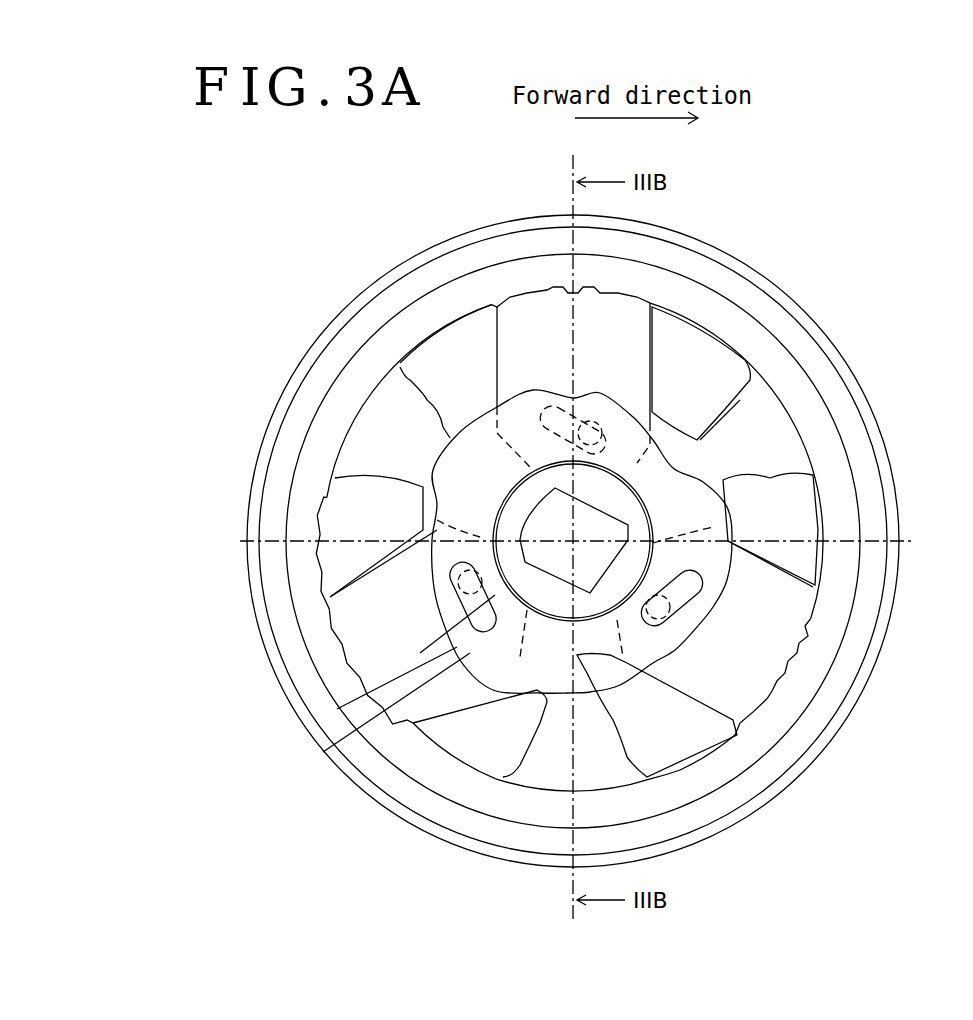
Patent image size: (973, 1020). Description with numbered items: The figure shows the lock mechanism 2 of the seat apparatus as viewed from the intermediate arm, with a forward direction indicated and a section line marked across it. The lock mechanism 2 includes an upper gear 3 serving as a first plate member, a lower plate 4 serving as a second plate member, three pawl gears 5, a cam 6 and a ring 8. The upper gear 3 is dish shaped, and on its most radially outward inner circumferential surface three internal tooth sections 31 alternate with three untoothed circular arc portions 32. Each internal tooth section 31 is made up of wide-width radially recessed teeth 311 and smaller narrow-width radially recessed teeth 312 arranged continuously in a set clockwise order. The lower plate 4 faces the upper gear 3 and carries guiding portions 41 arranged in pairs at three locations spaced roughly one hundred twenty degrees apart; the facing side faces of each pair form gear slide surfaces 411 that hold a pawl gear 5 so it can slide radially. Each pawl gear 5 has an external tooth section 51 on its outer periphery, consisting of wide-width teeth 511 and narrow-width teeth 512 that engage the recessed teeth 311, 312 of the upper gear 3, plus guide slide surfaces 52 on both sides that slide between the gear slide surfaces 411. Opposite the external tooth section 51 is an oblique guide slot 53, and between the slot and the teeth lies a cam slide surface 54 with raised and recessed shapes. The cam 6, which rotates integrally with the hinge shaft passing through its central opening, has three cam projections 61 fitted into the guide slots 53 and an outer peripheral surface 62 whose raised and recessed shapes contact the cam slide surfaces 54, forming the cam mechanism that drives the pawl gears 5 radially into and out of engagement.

The lock mechanism 2 is at (245, 252).
The upper gear 3 is at (372, 318).
The internal tooth sections 31 is at (312, 619).
The wide-width radially recessed teeth 311 is at (680, 768).
The narrow-width radially recessed teeth 312 is at (723, 760).
The circular arc portions 32 is at (340, 387).
The lower plate 4 is at (788, 433).
The guiding portions 41 is at (805, 517).
The gear slide surfaces 411 is at (625, 338).
The pawl gears 5 is at (617, 307).
The external tooth section 51 is at (569, 328).
The wide-width teeth 511 is at (797, 657).
The narrow-width teeth 512 is at (780, 680).
The guide slide surfaces 52 is at (740, 400).
The guide slot 53 is at (440, 565).
The cam slide surface 54 is at (323, 752).
The cam 6 is at (347, 441).
The cam projections 61 is at (458, 597).
The outer peripheral surface 62 is at (337, 709).
The ring 8 is at (790, 298).